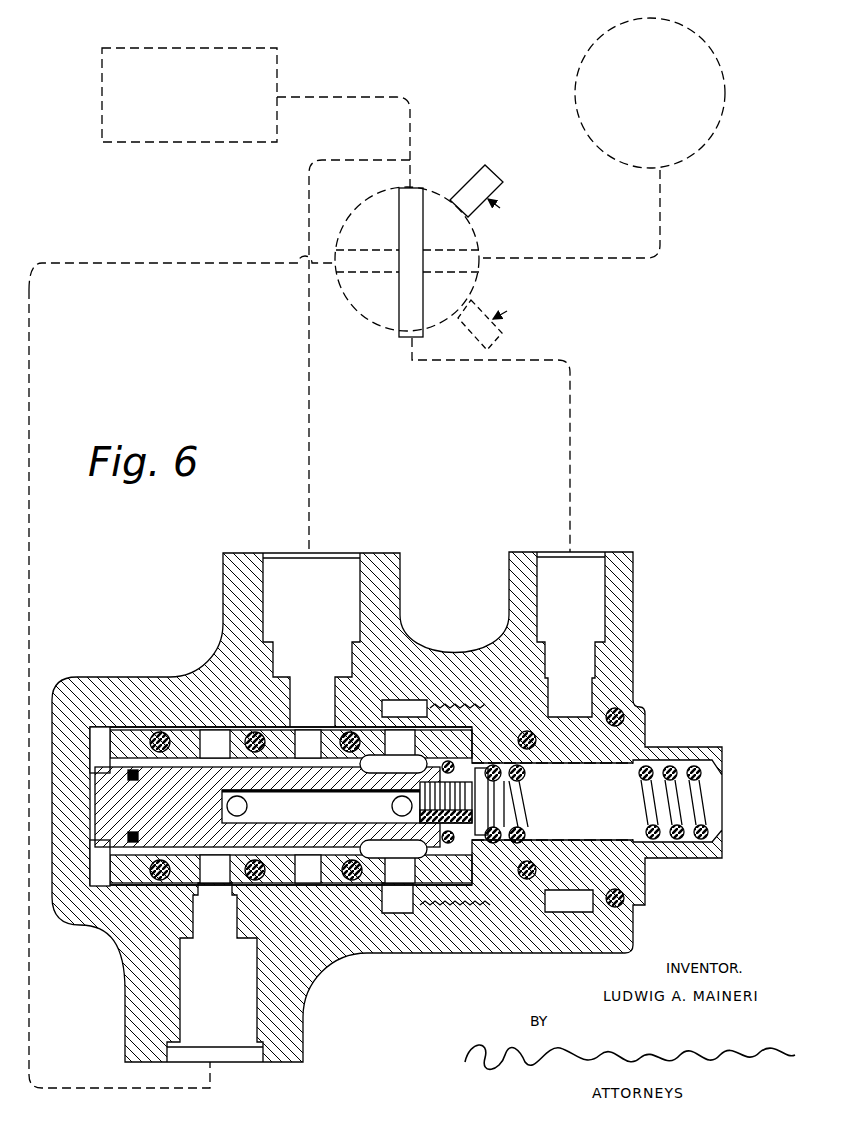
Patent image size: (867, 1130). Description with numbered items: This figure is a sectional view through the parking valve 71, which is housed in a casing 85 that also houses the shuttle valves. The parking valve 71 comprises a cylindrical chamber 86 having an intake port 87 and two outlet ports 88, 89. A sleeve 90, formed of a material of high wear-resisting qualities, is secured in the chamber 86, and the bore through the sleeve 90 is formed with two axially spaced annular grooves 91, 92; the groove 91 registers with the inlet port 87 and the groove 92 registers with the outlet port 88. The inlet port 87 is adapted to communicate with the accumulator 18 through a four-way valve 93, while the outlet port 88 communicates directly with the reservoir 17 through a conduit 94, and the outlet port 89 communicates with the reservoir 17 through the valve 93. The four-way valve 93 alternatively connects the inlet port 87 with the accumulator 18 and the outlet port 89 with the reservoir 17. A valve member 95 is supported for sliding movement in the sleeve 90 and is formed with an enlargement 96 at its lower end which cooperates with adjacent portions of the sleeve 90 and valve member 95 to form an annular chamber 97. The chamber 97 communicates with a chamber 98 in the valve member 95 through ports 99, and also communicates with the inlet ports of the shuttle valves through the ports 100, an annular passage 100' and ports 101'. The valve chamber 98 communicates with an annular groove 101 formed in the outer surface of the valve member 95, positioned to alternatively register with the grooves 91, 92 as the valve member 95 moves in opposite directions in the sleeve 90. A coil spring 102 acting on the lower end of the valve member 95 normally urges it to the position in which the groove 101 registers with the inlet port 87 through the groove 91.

The reservoir 17 is at (278, 80).
The accumulator 18 is at (580, 74).
The four-way valve 93 is at (482, 246).
The conduit 94 is at (310, 487).
The casing 85 is at (614, 658).
The parking valve 71 is at (658, 728).
The outlet port 88 is at (332, 577).
The outlet port 89 is at (553, 575).
The intake port 87 is at (230, 1028).
The cylindrical chamber 86 is at (133, 878).
The sleeve 90 is at (130, 866).
The valve member 95 is at (112, 793).
The annular groove 92 is at (305, 850).
The chamber 98 is at (345, 805).
The ports 99 is at (242, 806).
The annular groove 101 is at (253, 808).
The enlargement 96 is at (455, 830).
The ports 100 is at (455, 884).
The annular chamber 97 is at (412, 858).
The annular passage 100' is at (477, 917).
The ports 101' is at (546, 932).
The annular groove 91 is at (215, 850).
The coil spring 102 is at (662, 840).